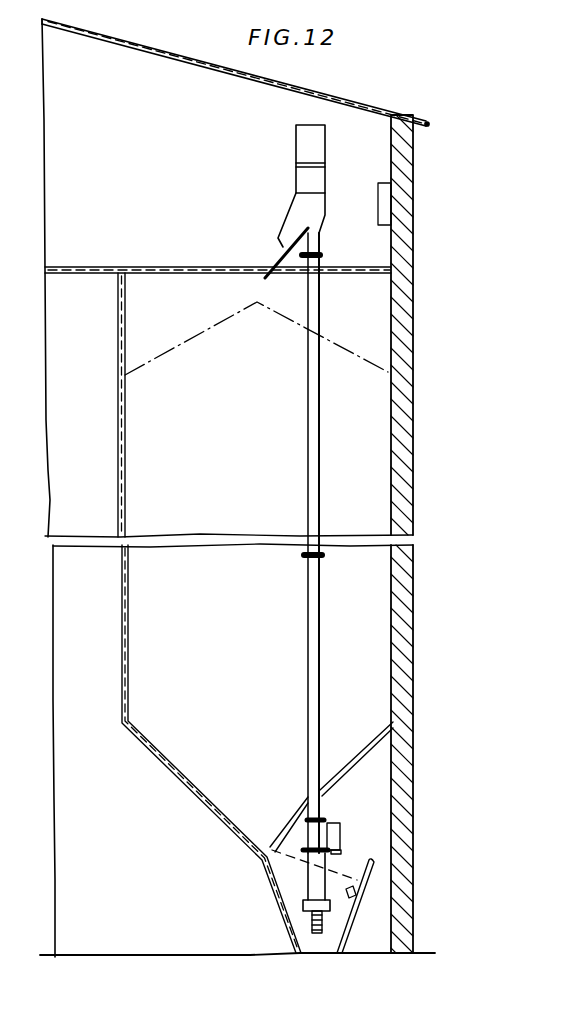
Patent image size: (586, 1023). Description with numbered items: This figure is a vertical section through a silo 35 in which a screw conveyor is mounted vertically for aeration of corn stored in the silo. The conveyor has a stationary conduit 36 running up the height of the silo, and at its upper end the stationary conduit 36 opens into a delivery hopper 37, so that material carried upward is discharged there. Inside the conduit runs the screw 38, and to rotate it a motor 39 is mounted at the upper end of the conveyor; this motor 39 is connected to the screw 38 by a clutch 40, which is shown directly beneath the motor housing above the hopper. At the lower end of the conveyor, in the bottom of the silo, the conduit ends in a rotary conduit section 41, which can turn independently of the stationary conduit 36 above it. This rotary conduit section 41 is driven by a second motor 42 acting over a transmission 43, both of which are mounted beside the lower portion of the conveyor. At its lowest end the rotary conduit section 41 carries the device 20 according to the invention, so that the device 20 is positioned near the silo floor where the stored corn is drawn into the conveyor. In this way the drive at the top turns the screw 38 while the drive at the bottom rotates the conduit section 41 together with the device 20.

The device 20 is at (352, 866).
The silo 35 is at (392, 315).
The stationary conduit 36 is at (319, 447).
The delivery hopper 37 is at (292, 218).
The screw 38 is at (313, 923).
The motor 39 is at (296, 141).
The clutch 40 is at (314, 177).
The rotary conduit section 41 is at (315, 880).
The motor 42 is at (343, 830).
The transmission 43 is at (334, 852).